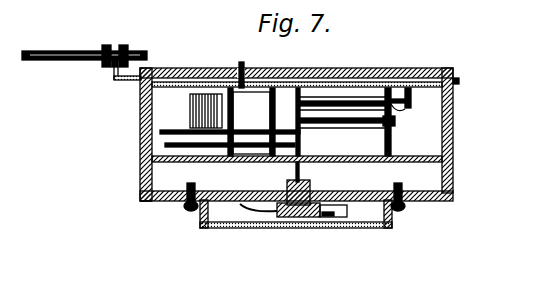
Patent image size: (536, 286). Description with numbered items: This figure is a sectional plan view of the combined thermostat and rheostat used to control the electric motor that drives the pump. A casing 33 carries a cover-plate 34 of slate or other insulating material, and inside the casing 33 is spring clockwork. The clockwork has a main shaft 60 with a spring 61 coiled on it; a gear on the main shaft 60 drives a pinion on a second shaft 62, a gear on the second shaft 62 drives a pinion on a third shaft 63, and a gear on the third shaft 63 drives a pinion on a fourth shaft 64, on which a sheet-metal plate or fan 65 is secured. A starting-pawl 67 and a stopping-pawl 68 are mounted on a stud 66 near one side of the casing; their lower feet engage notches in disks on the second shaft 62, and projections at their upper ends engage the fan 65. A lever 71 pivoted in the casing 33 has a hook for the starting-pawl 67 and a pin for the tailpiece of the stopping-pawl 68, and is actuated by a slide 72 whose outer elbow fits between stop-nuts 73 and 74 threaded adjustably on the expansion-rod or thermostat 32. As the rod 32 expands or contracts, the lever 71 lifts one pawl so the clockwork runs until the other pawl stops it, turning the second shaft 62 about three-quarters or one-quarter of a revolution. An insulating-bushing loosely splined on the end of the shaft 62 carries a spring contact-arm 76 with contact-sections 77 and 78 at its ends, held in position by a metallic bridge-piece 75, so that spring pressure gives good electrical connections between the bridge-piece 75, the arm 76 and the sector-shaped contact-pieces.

The expansion-rod or thermostat 32 is at (30, 51).
The casing 33 is at (140, 147).
The cover-plate 34 is at (153, 203).
The main shaft 60 is at (243, 66).
The spring 61 is at (190, 108).
The second shaft 62 is at (300, 174).
The third shaft 63 is at (228, 116).
The fourth shaft 64 is at (321, 101).
The sheet-metal plate or fan 65 is at (378, 71).
The stud 66 is at (394, 140).
The starting-pawl 67 is at (396, 130).
The stopping-pawl 68 is at (455, 78).
The lever 71 is at (400, 110).
The slide 72 is at (118, 84).
The stop-nut 73 is at (105, 46).
The stop-nut 74 is at (129, 48).
The metallic bridge-piece 75 is at (221, 229).
The spring contact-arm 76 is at (328, 229).
The contact-section 77 is at (222, 192).
The contact-section 78 is at (347, 193).